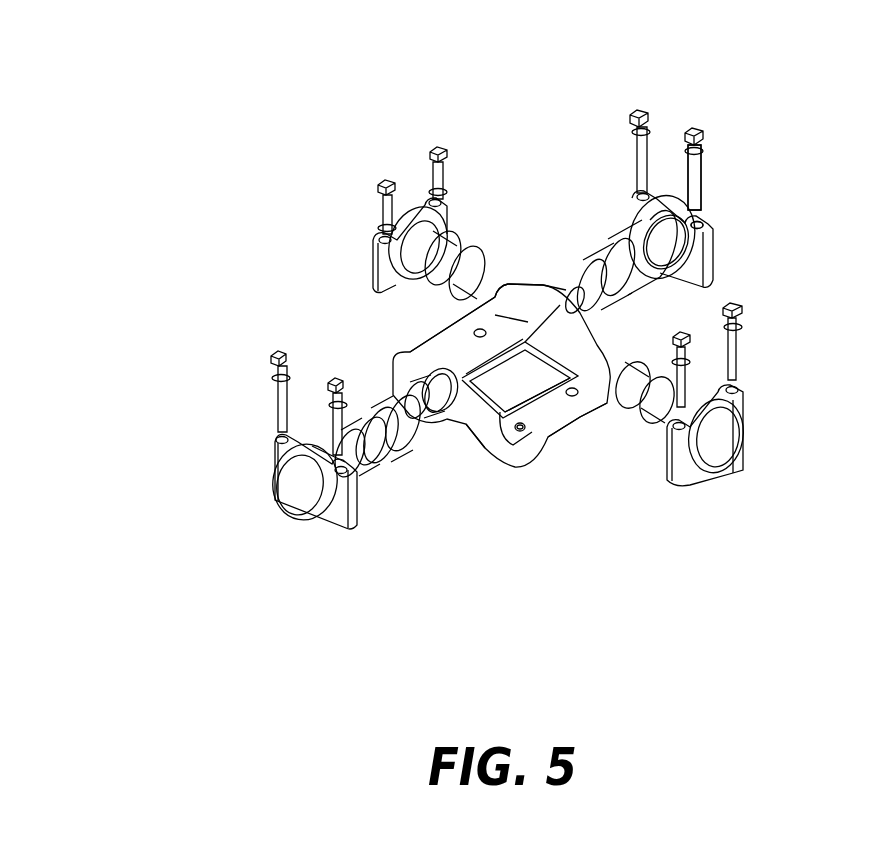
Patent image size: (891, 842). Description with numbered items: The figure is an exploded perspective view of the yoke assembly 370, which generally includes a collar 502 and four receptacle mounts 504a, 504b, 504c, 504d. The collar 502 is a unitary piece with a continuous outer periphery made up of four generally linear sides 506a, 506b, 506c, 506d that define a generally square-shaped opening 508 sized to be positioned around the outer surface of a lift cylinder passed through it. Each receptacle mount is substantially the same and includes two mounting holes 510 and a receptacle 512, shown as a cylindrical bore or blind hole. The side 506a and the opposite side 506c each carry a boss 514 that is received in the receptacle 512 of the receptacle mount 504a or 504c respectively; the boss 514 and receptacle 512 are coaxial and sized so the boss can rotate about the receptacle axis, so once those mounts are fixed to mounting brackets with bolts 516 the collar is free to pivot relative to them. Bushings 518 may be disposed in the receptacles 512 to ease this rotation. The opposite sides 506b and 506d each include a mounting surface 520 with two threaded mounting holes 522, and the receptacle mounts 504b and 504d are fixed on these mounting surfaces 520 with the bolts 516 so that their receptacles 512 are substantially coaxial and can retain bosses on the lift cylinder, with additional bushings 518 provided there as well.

The yoke assembly 370 is at (152, 80).
The collar 502 is at (507, 465).
The receptacle mount 504a is at (300, 503).
The receptacle mount 504b is at (377, 278).
The receptacle mount 504c is at (712, 249).
The receptacle mount 504d is at (723, 443).
The side 506a is at (477, 439).
The side 506b is at (451, 344).
The side 506c is at (519, 287).
The side 506d is at (585, 415).
The opening 508 is at (515, 397).
The mounting hole 510 is at (700, 220).
The receptacle 512 is at (677, 247).
The boss 514 is at (418, 402).
The bolt 516 is at (702, 172).
The bushing 518 is at (597, 258).
The mounting surface 520 is at (557, 407).
The threaded mounting hole 522 is at (521, 431).